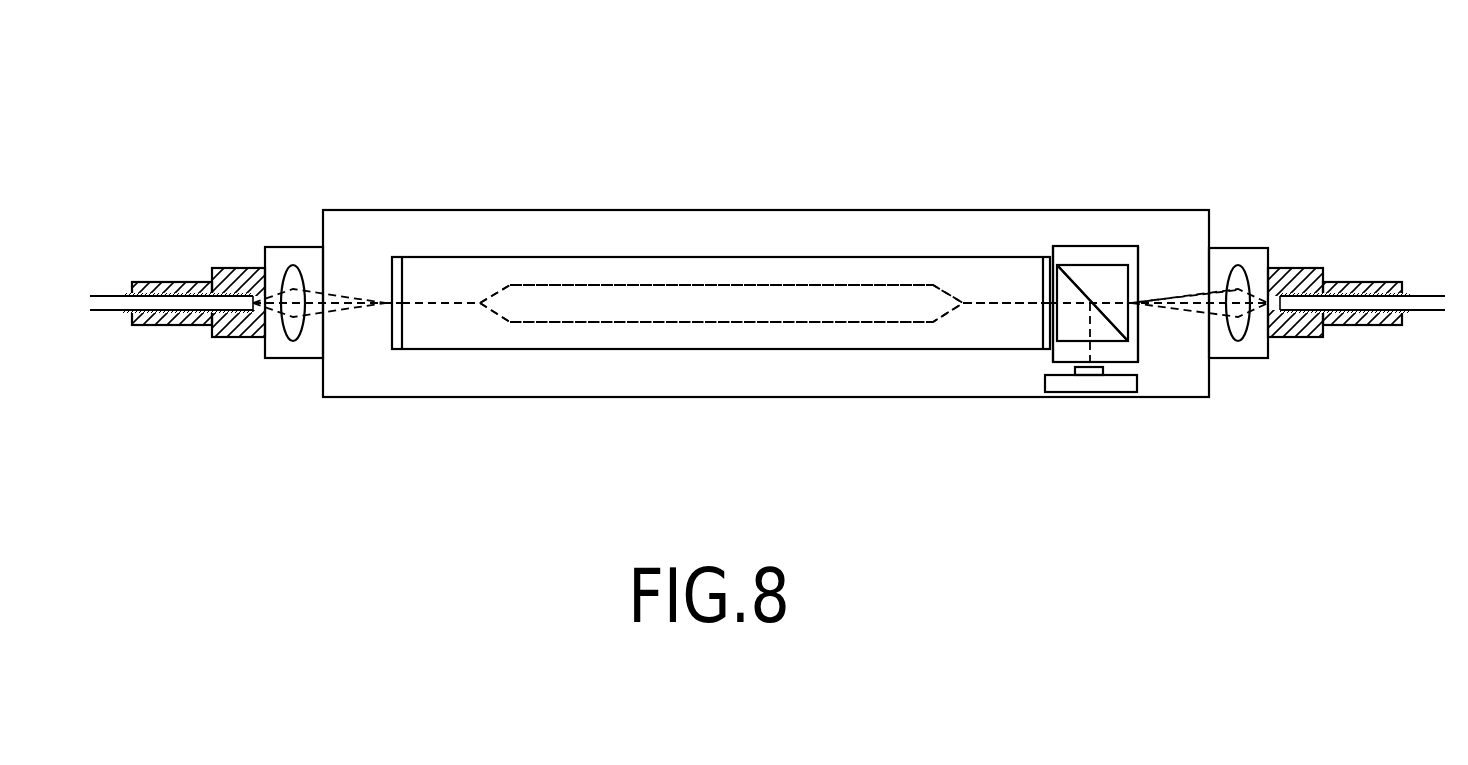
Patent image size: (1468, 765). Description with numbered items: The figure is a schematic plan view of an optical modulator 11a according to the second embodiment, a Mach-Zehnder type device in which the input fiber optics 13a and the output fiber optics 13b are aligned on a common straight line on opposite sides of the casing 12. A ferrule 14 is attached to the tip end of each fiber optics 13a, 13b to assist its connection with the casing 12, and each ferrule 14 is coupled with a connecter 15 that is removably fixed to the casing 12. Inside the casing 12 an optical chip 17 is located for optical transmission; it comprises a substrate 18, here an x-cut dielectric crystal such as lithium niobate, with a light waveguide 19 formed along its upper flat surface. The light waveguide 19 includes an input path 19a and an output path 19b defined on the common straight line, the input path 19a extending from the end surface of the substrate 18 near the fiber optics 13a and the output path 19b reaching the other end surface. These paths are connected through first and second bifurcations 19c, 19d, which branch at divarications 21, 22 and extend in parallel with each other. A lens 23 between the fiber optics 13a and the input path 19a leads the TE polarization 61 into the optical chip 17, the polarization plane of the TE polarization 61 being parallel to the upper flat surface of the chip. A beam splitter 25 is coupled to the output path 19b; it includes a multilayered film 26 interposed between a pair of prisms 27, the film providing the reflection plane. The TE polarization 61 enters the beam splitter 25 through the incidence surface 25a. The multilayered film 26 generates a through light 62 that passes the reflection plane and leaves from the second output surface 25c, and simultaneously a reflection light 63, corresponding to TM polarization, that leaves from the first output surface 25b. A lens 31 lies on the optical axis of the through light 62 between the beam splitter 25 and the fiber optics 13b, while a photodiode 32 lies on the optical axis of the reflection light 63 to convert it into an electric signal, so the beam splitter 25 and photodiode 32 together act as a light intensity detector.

The optical modulator 11a is at (337, 147).
The casing 12 is at (323, 216).
The input fiber optics 13a is at (110, 312).
The output fiber optics 13b is at (1425, 313).
The ferrule 14 is at (162, 292).
The connecter 15 is at (227, 337).
The optical chip 17 is at (457, 257).
The substrate 18 is at (457, 349).
The light waveguide 19 is at (717, 284).
The input path 19a is at (441, 284).
The output path 19b is at (1032, 302).
The first bifurcation 19c is at (620, 285).
The second bifurcation 19d is at (582, 323).
The divarication 21 is at (483, 303).
The divarication 22 is at (965, 303).
The lens 23 is at (297, 345).
The beam splitter 25 is at (1121, 259).
The incidence surface 25a is at (1057, 258).
The first output surface 25b is at (1058, 345).
The second output surface 25c is at (1130, 323).
The multilayered film 26 is at (1123, 333).
The prism 27 is at (1097, 265).
The lens 31 is at (1238, 265).
The photodiode 32 is at (1074, 372).
The TE polarization 61 is at (342, 313).
The through light 62 is at (1192, 291).
The reflection light 63 is at (1095, 352).